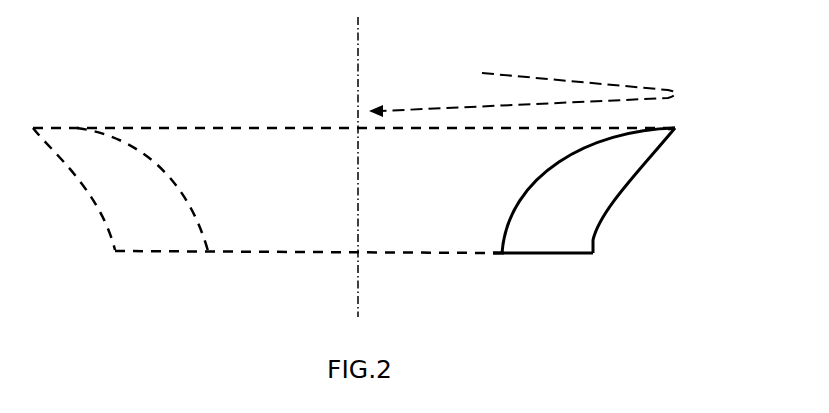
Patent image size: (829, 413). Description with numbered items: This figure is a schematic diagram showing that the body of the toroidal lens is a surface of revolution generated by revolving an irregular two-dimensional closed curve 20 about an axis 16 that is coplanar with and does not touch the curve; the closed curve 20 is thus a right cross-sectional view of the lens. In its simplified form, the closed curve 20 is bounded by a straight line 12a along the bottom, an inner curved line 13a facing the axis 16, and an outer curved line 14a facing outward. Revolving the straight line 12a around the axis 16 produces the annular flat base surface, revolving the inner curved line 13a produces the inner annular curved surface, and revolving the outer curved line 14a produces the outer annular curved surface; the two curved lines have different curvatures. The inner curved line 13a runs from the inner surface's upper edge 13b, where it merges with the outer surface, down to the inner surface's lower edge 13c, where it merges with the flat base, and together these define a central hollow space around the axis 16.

The axis 16 is at (358, 82).
The two-dimensional closed curve 20 is at (586, 201).
The inner curved line 13a is at (528, 182).
The inner surface's upper edge 13b is at (675, 129).
The inner surface's lower edge 13c is at (502, 255).
The outer curved line 14a is at (605, 218).
The straight line 12a is at (550, 255).